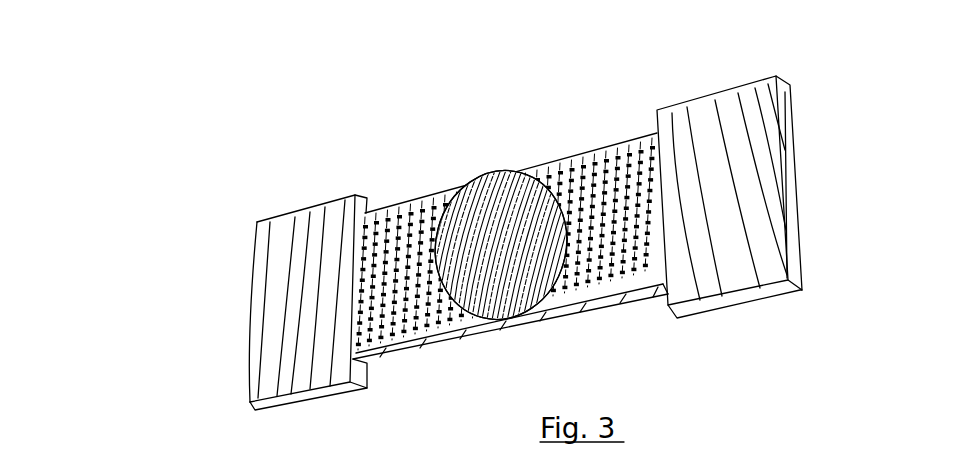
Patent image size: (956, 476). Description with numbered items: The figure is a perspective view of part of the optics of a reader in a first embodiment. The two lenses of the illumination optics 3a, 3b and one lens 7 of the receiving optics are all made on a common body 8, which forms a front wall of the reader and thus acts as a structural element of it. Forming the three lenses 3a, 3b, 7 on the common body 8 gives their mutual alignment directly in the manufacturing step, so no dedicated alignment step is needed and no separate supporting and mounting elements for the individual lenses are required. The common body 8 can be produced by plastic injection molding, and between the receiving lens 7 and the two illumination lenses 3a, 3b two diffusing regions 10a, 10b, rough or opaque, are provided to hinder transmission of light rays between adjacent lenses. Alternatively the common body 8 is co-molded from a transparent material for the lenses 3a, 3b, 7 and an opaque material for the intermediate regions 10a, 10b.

The common body 8 is at (275, 147).
The lens of the illumination optics 3a is at (277, 350).
The lens of the illumination optics 3b is at (727, 110).
The diffusing region 10a is at (398, 213).
The diffusing region 10b is at (610, 150).
The lens of the receiving optics 7 is at (492, 283).